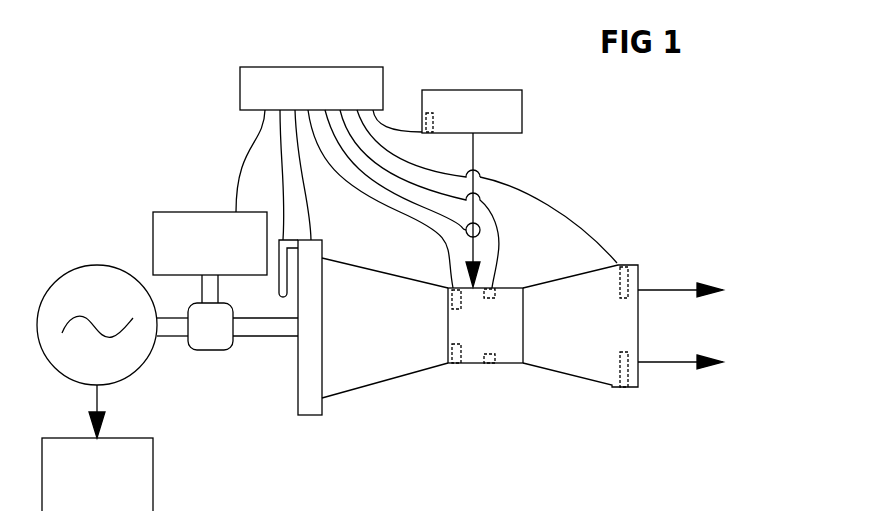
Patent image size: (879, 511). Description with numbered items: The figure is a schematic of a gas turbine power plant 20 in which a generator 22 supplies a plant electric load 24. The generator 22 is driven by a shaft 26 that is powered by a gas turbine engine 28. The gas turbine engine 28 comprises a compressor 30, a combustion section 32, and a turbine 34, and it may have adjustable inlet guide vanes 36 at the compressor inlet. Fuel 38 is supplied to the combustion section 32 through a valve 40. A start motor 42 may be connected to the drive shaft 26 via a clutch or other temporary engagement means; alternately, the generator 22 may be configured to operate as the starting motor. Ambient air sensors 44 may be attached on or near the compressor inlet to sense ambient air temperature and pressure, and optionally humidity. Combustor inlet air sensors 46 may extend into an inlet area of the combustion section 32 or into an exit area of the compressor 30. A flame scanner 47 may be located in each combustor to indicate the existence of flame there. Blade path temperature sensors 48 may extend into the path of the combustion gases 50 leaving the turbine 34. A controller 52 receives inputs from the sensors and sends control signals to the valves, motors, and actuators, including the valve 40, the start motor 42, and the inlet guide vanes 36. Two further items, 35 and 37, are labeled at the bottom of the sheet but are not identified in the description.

The gas turbine power plant 20 is at (160, 146).
The generator 22 is at (65, 272).
The plant electric load 24 is at (153, 462).
The shaft 26 is at (260, 337).
The gas turbine engine 28 is at (586, 182).
The compressor 30 is at (392, 342).
The combustion section 32 is at (500, 342).
The turbine 34 is at (588, 342).
The sensor 35 is at (522, 510).
The adjustable inlet guide vanes 36 is at (312, 415).
The sensor 37 is at (461, 510).
The fuel 38 is at (522, 110).
The valve 40 is at (481, 230).
The start motor 42 is at (153, 230).
The ambient air sensors 44 is at (279, 290).
The combustor inlet air sensors 46 is at (459, 352).
The flame scanner 47 is at (497, 290).
The blade path temperature sensors 48 is at (620, 370).
The combustion gases 50 is at (672, 287).
The controller 52 is at (305, 67).